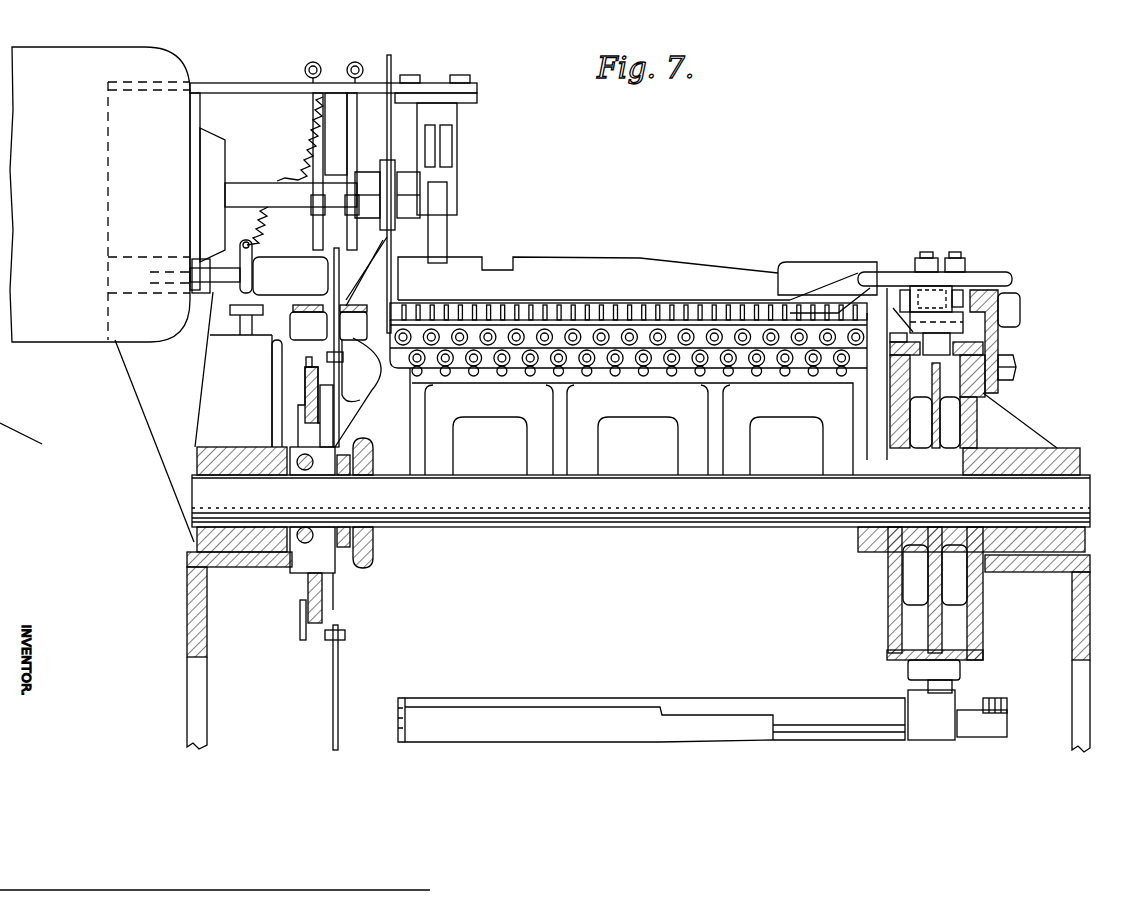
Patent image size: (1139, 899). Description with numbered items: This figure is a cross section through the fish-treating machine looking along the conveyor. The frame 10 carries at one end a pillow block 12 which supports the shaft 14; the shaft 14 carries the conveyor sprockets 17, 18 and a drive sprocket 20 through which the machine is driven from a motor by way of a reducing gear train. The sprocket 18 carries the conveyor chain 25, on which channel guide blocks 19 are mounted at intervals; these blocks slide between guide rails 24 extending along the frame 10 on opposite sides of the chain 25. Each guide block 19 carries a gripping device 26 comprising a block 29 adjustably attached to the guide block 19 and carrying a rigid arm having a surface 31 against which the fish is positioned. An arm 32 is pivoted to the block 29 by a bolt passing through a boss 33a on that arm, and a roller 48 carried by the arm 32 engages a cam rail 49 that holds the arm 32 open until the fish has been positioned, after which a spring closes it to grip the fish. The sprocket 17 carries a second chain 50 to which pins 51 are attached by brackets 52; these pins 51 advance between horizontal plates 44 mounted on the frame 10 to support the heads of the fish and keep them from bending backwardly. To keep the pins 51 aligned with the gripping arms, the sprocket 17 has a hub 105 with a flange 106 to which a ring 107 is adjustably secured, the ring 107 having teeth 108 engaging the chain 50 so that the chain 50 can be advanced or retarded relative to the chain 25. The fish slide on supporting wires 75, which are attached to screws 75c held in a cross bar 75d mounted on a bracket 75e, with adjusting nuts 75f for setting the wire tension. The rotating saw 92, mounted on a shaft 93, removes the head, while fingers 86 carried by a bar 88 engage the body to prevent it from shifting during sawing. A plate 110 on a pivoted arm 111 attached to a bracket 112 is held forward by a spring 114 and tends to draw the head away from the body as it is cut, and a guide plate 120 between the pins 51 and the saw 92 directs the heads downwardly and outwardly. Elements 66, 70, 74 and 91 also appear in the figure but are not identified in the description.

The frame 10 is at (190, 609).
The pillow block 12 is at (197, 462).
The shaft 14 is at (665, 530).
The conveyor sprocket 17 is at (323, 601).
The conveyor sprocket 18 is at (925, 578).
The channel guide block 19 is at (1016, 372).
The drive sprocket 20 is at (372, 548).
The guide rail 24 is at (985, 348).
The conveyor chain 25 is at (983, 393).
The gripping device 26 is at (820, 262).
The block 29 is at (968, 320).
The surface 31 is at (590, 262).
The arm 32 is at (878, 270).
The boss 33a is at (943, 289).
The horizontal plate 44 is at (343, 320).
The roller 48 is at (958, 287).
The cam rail 49 is at (1020, 298).
The chain 50 is at (307, 370).
The pin 51 is at (339, 272).
The bracket 52 is at (329, 378).
The link 66 is at (352, 243).
The spring 70 is at (315, 118).
The eye bolts 74 is at (352, 64).
The supporting wire 75 is at (632, 318).
The screw 75c is at (658, 381).
The cross bar 75d is at (772, 378).
The bracket 75e is at (722, 466).
The adjusting nut 75f is at (553, 380).
The finger 86 is at (447, 246).
The bar 88 is at (470, 100).
The housing 91 is at (100, 194).
The rotating saw 92 is at (387, 128).
The shaft 93 is at (305, 191).
The hub 105 is at (308, 435).
The flange 106 is at (340, 410).
The ring 107 is at (305, 396).
The teeth 108 is at (317, 636).
The plate 110 is at (289, 268).
The pivoted arm 111 is at (233, 288).
The bracket 112 is at (197, 296).
The spring 114 is at (300, 142).
The guide plate 120 is at (390, 240).